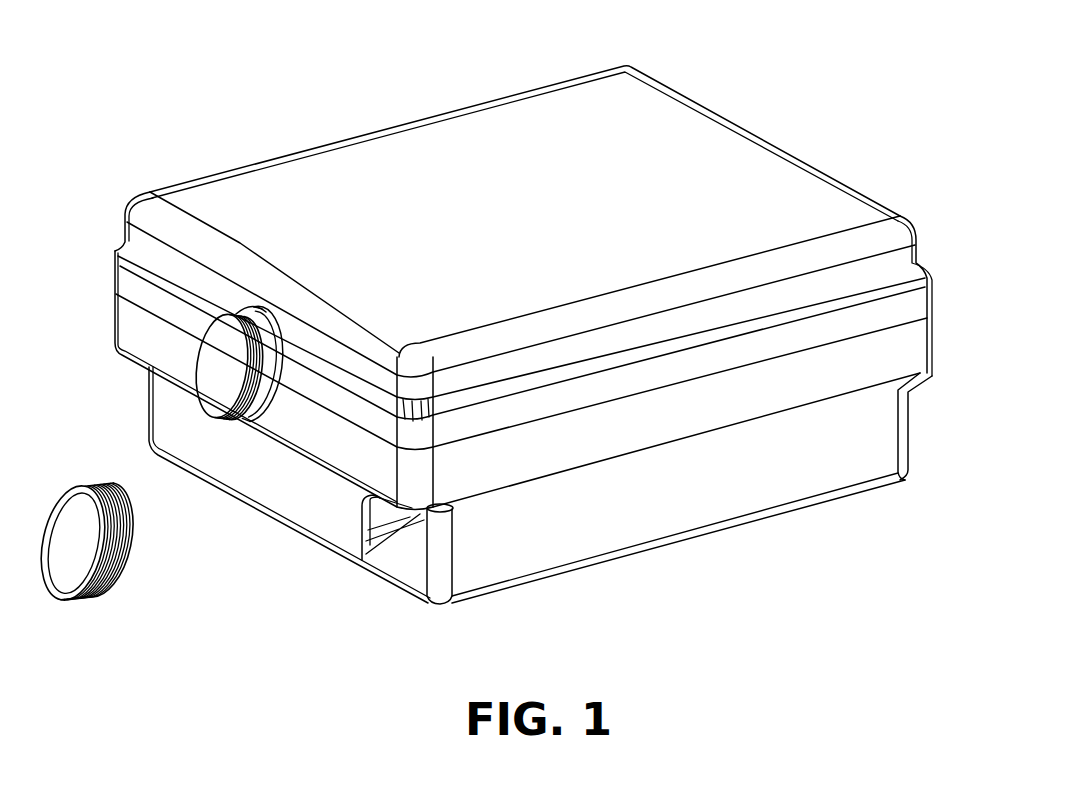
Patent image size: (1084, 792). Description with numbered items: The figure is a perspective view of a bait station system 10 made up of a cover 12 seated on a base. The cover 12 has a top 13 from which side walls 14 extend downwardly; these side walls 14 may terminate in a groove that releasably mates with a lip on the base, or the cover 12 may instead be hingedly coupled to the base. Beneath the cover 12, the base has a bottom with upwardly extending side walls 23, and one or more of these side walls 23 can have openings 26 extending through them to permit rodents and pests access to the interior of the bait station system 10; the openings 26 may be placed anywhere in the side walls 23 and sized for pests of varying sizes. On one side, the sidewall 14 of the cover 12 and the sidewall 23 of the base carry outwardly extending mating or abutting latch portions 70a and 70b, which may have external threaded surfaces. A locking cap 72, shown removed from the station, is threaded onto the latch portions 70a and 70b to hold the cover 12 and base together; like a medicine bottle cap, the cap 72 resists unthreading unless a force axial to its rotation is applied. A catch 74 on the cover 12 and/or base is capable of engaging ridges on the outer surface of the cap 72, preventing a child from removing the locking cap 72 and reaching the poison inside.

The bait station system 10 is at (733, 52).
The cover 12 is at (414, 147).
The top 13 is at (575, 130).
The side walls 14 is at (893, 265).
The side walls 23 is at (728, 490).
The openings 26 is at (400, 575).
The latch portion 70a is at (205, 347).
The latch portion 70b is at (223, 407).
The locking cap 72 is at (100, 603).
The catch 74 is at (267, 313).